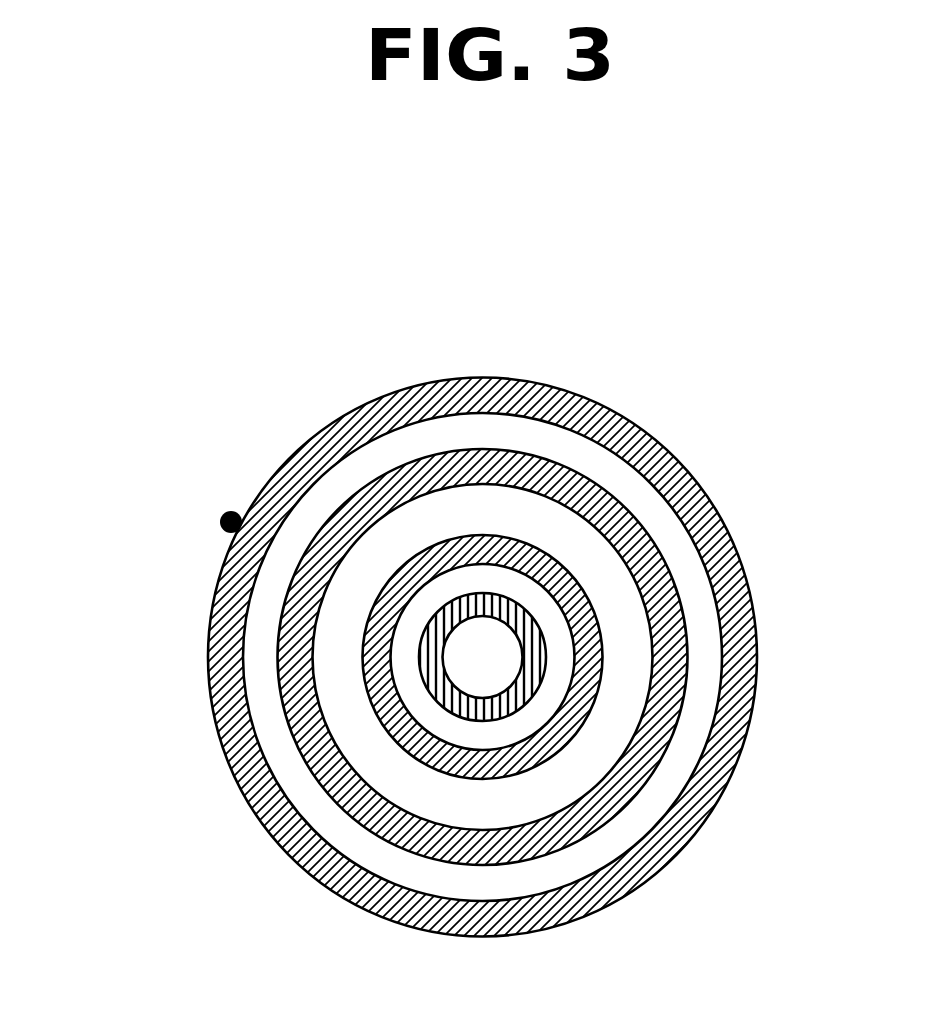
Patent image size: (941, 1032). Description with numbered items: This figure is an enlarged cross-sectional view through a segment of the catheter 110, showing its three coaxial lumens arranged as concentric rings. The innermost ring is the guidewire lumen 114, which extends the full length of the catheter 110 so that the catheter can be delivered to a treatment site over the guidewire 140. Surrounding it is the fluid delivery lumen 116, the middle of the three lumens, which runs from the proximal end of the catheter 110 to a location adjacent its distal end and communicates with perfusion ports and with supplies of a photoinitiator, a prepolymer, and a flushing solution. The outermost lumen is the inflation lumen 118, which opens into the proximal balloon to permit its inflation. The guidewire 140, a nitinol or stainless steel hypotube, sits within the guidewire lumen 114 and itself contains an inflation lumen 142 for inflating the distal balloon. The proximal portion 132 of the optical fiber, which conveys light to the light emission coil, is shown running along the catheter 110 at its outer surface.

The catheter 110 is at (280, 378).
The guidewire lumen 114 is at (408, 636).
The fluid delivery lumen 116 is at (355, 715).
The inflation lumen 118 is at (305, 800).
The proximal portion of the optical fiber 132 is at (222, 516).
The guidewire 140 is at (540, 627).
The inflation lumen 142 is at (492, 670).